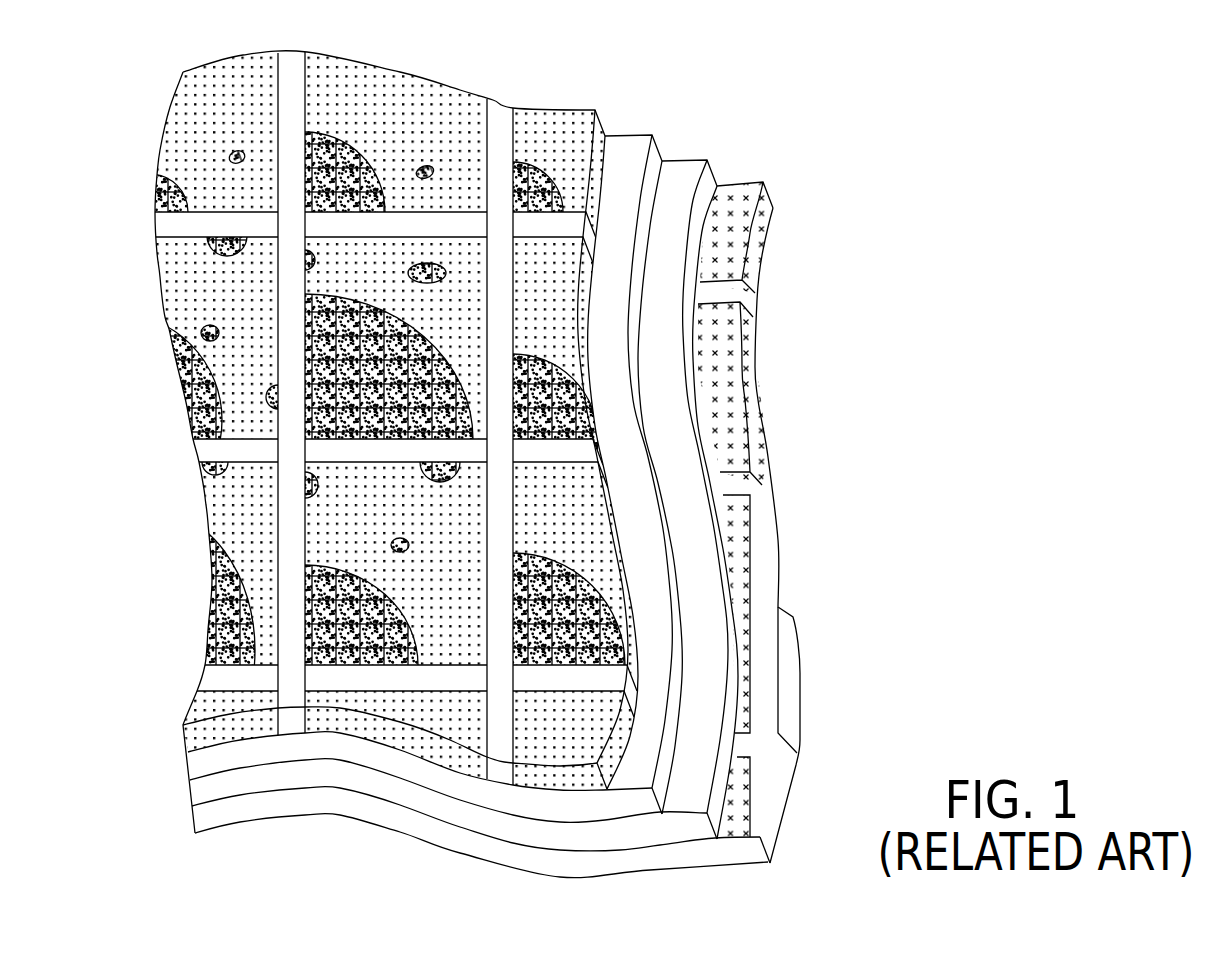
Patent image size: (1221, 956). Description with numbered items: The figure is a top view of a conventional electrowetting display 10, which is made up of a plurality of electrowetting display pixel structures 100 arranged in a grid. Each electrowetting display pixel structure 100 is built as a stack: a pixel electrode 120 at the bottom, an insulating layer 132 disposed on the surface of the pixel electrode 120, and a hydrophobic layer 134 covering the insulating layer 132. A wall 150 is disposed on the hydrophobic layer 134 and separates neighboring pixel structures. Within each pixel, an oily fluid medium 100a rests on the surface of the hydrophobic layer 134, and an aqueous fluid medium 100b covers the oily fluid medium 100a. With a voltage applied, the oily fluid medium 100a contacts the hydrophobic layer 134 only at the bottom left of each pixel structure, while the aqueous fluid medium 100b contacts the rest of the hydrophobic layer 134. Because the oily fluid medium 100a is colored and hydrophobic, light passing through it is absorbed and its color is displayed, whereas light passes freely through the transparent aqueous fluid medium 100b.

The electrowetting display 10 is at (588, 443).
The electrowetting display pixel structure 100 is at (365, 421).
The oily fluid medium 100a is at (533, 177).
The aqueous fluid medium 100b is at (396, 442).
The wall 150 is at (500, 107).
The hydrophobic layer 134 is at (623, 148).
The insulating layer 132 is at (682, 170).
The pixel electrode 120 is at (742, 192).